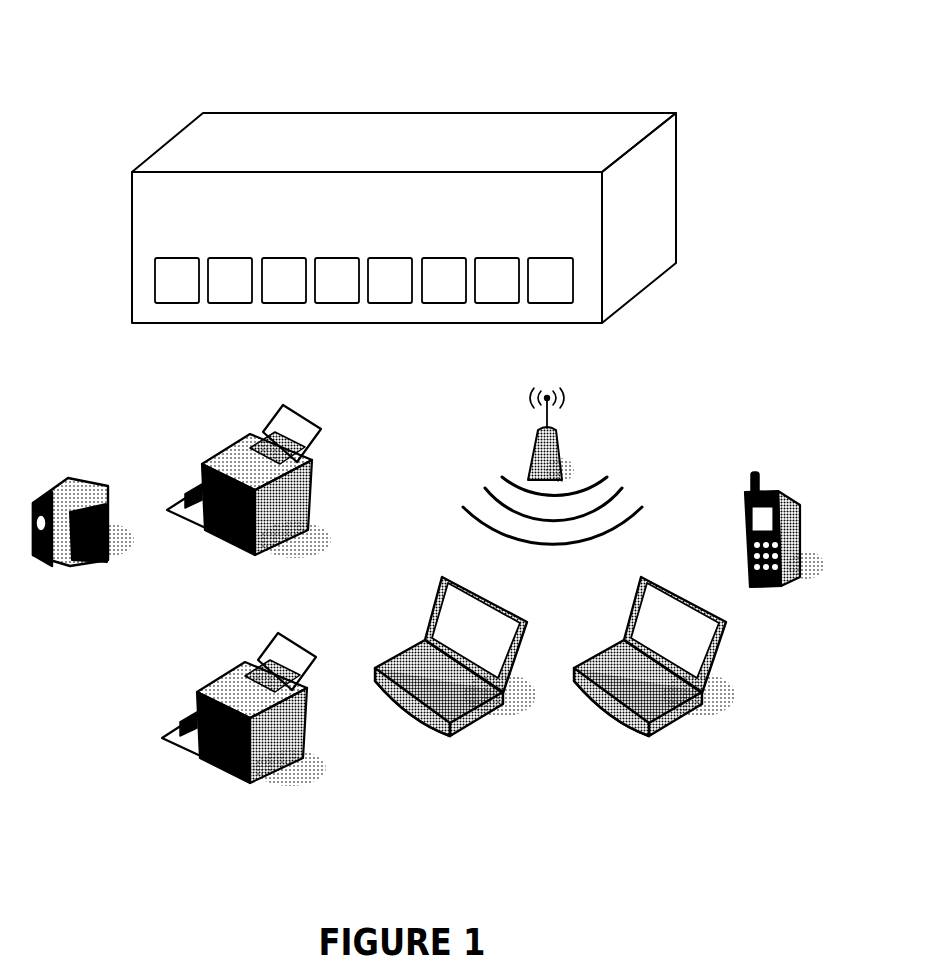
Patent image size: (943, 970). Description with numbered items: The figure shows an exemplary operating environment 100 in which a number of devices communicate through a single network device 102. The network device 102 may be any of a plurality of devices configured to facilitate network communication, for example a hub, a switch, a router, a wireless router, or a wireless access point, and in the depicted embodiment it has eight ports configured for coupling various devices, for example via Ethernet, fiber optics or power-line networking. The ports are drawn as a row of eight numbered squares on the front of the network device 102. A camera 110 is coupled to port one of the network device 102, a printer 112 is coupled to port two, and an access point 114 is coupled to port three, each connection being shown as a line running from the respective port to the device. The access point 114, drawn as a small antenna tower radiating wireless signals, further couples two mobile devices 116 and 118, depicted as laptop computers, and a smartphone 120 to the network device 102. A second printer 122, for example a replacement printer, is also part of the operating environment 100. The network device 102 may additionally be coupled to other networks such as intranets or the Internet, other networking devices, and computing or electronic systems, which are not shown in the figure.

The operating environment 100 is at (123, 32).
The network device 102 is at (385, 210).
The camera 110 is at (175, 280).
The printer 112 is at (230, 281).
The access point 114 is at (283, 282).
The mobile device 116 is at (455, 673).
The mobile device 118 is at (654, 671).
The smartphone 120 is at (784, 550).
The printer 122 is at (207, 727).